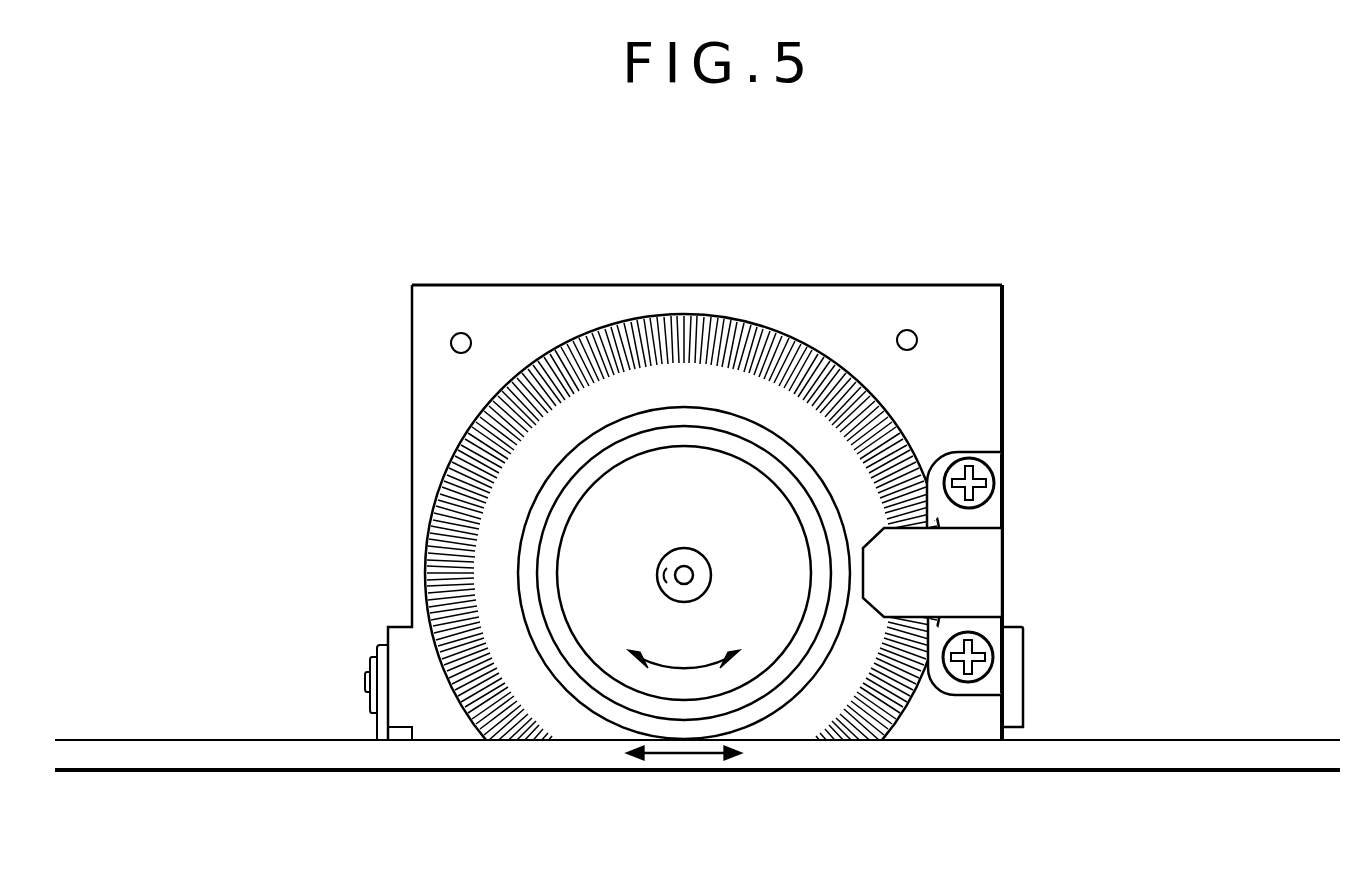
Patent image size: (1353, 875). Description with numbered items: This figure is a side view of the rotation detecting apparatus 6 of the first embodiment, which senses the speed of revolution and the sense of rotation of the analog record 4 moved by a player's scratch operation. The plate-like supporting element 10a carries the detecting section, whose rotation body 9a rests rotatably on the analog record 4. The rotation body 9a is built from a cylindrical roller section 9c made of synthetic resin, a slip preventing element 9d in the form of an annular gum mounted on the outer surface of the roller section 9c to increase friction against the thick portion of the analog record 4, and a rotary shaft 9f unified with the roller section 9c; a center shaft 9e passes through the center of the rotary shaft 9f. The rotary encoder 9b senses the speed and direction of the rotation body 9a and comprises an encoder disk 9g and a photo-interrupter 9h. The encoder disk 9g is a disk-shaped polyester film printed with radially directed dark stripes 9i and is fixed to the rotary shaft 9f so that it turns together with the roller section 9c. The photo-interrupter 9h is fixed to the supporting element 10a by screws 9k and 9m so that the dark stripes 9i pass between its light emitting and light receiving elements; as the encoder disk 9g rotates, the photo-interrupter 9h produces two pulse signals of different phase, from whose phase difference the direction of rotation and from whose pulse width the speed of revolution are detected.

The analog record 4 is at (1210, 738).
The rotation detecting apparatus 6 is at (1097, 384).
The supporting element 10a is at (987, 323).
The rotation body 9a is at (592, 719).
The rotary encoder 9b is at (1028, 545).
The roller section 9c is at (690, 708).
The slip preventing element 9d is at (775, 708).
The center shaft 9e is at (699, 577).
The rotary shaft 9f is at (686, 548).
The encoder disk 9g is at (722, 315).
The photo-interrupter 9h is at (990, 590).
The dark stripes 9i is at (664, 336).
The screw 9k is at (1000, 490).
The screw 9m is at (1000, 654).